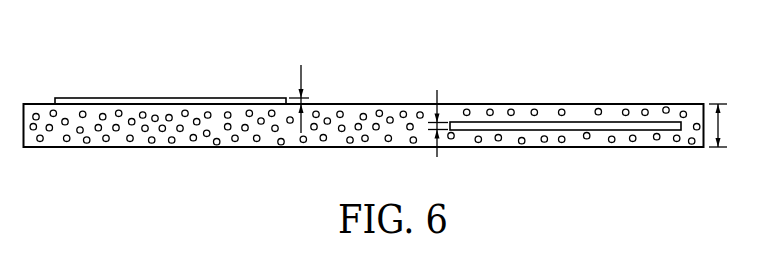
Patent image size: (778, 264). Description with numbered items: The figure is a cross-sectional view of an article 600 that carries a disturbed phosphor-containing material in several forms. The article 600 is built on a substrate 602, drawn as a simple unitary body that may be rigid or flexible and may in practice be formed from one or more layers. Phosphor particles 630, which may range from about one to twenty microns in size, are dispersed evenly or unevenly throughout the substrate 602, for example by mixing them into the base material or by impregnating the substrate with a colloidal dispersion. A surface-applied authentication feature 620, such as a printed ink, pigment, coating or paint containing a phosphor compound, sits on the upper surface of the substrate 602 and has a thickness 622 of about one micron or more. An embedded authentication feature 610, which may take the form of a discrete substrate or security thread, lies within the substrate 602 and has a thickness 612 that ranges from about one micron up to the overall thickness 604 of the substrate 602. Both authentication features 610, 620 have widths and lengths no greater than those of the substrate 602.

The article 600 is at (77, 44).
The substrate 602 is at (47, 103).
The surface-applied authentication feature 620 is at (188, 97).
The thickness 622 is at (301, 74).
The thickness 612 is at (438, 95).
The embedded authentication feature 610 is at (573, 125).
The phosphor particles 630 is at (645, 109).
The thickness 604 is at (718, 123).